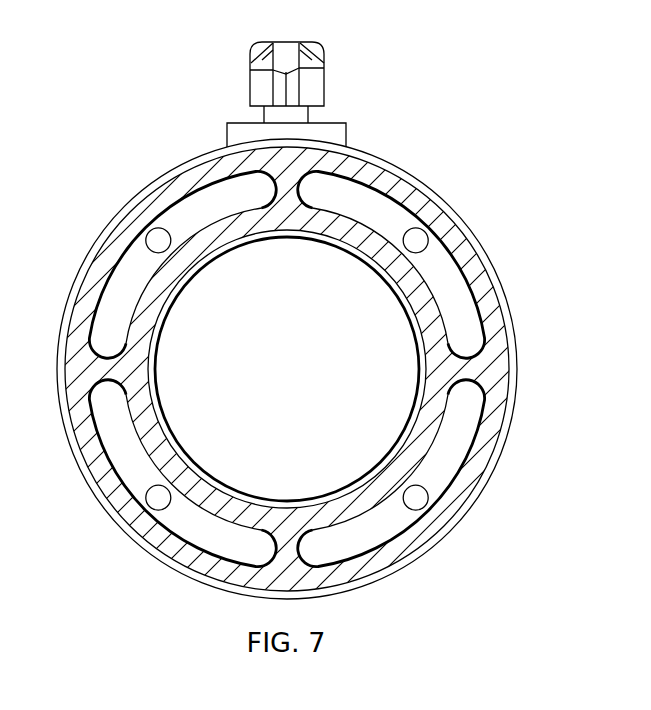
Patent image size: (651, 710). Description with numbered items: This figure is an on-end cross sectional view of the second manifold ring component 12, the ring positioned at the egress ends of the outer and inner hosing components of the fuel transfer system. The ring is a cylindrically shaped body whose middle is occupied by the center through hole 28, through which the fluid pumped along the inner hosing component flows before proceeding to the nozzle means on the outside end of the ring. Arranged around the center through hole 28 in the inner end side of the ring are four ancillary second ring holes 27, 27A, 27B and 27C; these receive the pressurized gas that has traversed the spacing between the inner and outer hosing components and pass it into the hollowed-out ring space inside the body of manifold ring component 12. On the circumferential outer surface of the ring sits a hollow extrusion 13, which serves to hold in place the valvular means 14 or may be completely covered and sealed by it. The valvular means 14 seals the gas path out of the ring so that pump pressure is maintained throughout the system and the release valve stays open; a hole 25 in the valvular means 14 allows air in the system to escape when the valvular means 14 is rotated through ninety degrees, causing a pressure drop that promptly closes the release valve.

The second manifold ring component 12 is at (430, 188).
The hollow extrusion 13 is at (310, 113).
The valvular means 14 is at (325, 78).
The hole 25 is at (286, 50).
The ancillary second ring hole 27 is at (418, 494).
The ancillary second ring hole 27A is at (416, 240).
The ancillary second ring hole 27B is at (157, 240).
The ancillary second ring hole 27C is at (157, 497).
The center through hole 28 is at (287, 371).